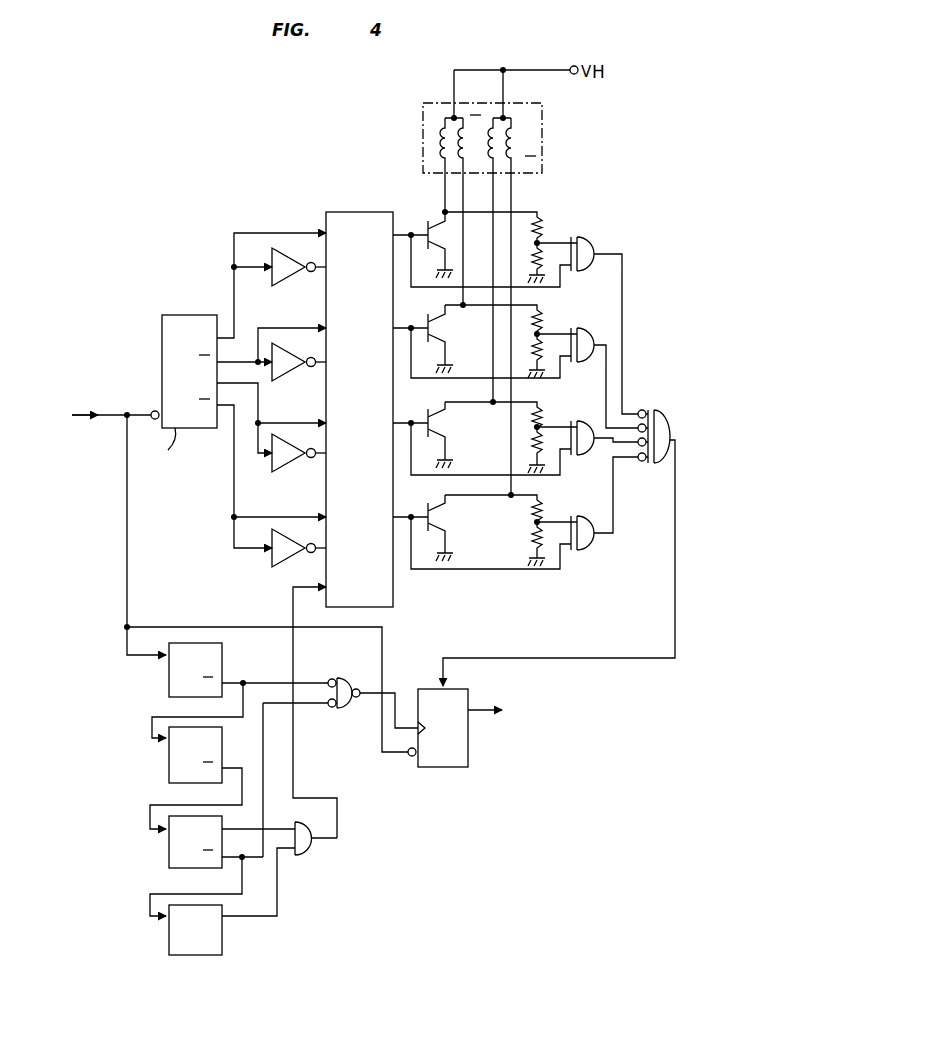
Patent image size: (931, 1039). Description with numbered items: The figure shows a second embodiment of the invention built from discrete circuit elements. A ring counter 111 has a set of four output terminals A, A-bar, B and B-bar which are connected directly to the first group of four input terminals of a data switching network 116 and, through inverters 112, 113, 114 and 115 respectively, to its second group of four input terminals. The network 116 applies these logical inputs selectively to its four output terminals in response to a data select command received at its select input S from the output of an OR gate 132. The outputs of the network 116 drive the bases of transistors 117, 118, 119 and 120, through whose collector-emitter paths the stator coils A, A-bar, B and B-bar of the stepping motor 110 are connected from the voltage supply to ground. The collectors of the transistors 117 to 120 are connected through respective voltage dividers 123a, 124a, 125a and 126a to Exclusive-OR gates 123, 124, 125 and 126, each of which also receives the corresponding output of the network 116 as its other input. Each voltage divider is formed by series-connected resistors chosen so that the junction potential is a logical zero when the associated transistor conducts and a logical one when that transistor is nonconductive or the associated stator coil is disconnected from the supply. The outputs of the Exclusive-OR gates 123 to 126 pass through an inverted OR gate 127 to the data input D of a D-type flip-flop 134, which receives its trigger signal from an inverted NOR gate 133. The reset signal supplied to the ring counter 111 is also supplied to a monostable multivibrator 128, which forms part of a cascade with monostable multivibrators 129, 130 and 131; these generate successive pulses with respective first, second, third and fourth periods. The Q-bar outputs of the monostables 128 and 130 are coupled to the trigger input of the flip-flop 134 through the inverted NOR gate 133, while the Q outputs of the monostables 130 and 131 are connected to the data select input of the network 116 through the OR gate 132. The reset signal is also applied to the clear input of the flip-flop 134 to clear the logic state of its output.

The stepping motor 110 is at (544, 121).
The ring counter 111 is at (185, 315).
The inverter 112 is at (287, 283).
The inverter 113 is at (287, 374).
The inverter 114 is at (287, 470).
The inverter 115 is at (282, 566).
The data switching network 116 is at (356, 212).
The transistor 117 is at (427, 226).
The transistor 118 is at (427, 320).
The transistor 119 is at (427, 414).
The transistor 120 is at (427, 508).
The Exclusive-OR gate 123 is at (584, 241).
The voltage divider 123a is at (540, 222).
The Exclusive-OR gate 124 is at (584, 334).
The voltage divider 124a is at (540, 316).
The Exclusive-OR gate 125 is at (590, 425).
The voltage divider 125a is at (539, 416).
The Exclusive-OR gate 126 is at (585, 553).
The voltage divider 126a is at (539, 510).
The inverted OR gate 127 is at (663, 420).
The monostable multivibrator 128 is at (222, 660).
The monostable multivibrator 129 is at (222, 763).
The monostable multivibrator 130 is at (168, 841).
The monostable multivibrator 131 is at (222, 935).
The OR gate 132 is at (305, 856).
The inverted NOR gate 133 is at (345, 711).
The D-type flip-flop 134 is at (440, 767).